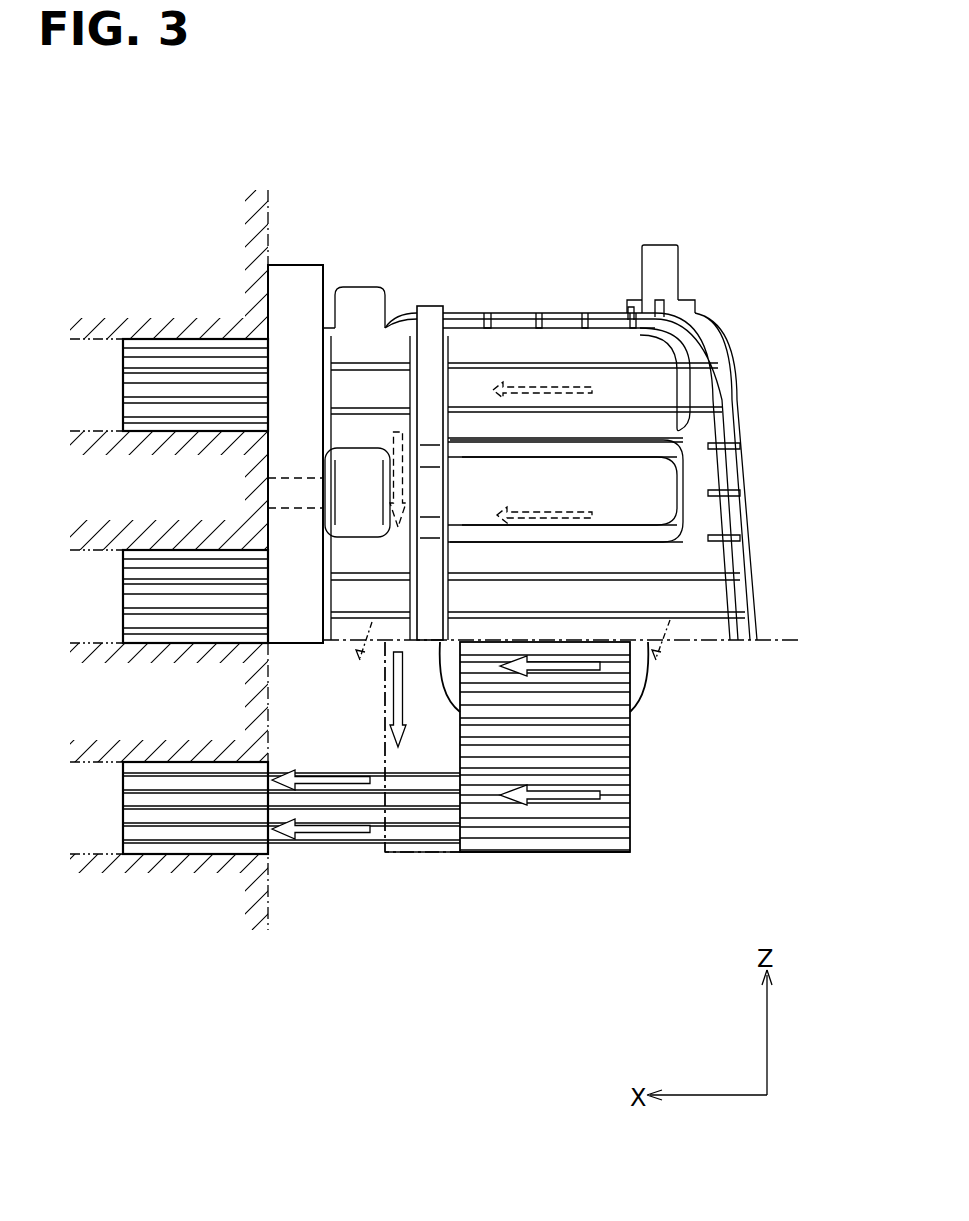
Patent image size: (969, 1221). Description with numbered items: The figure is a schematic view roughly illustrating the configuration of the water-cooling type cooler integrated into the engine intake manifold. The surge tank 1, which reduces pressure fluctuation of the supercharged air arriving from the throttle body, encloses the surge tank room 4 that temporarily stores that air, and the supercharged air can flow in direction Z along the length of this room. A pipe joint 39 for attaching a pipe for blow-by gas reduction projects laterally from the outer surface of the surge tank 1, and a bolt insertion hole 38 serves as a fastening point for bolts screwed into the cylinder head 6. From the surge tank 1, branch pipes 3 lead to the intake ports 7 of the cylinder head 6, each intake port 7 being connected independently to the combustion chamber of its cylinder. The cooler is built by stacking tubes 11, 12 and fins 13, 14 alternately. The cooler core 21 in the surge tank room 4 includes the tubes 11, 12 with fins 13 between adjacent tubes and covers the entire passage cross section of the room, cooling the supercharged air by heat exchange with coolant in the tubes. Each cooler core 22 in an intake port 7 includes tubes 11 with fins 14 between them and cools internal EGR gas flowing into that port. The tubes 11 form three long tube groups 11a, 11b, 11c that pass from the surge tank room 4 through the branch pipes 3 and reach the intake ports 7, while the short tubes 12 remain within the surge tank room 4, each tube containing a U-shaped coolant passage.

The surge tank 1 is at (520, 320).
The branch pipes 3 is at (367, 345).
The surge tank room 4 is at (420, 747).
The cylinder head 6 is at (248, 232).
The intake port 7 is at (85, 355).
The tubes 11 is at (148, 418).
The long tube group 11a is at (112, 340).
The long tube group 11b is at (112, 551).
The long tube group 11c is at (112, 763).
The tubes 12 is at (623, 740).
The fins 13 is at (557, 853).
The fins 14 is at (163, 342).
The cooler core 21 is at (615, 865).
The cooler core 22 is at (117, 318).
The bolt insertion hole 38 is at (295, 475).
The pipe joint 39 is at (668, 262).